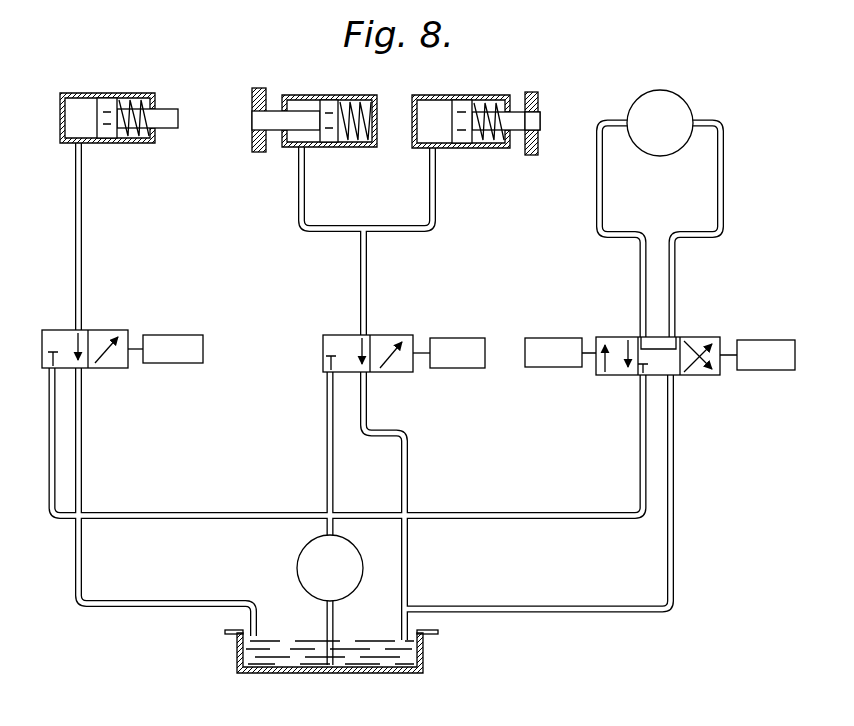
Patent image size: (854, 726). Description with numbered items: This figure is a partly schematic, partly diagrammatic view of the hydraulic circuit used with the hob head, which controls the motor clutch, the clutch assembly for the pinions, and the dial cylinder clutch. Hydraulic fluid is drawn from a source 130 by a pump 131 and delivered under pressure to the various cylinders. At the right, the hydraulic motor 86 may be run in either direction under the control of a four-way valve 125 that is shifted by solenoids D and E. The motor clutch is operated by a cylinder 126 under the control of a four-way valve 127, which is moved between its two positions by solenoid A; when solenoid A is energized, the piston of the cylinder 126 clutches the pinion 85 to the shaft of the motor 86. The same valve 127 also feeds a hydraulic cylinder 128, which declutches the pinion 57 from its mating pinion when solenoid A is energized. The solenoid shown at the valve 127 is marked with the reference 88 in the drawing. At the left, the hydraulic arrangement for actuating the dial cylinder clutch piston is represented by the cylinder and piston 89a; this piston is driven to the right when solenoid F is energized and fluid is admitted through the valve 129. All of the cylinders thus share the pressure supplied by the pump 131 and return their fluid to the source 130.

The cylinder and piston 89a is at (173, 105).
The pinion 57 is at (260, 92).
The hydraulic cylinder 128 is at (336, 97).
The cylinder 126 is at (432, 97).
The pinion 85 is at (536, 97).
The hydraulic motor 86 is at (676, 108).
The valve 129 is at (51, 330).
The four-way valve 127 is at (323, 348).
The solenoid A 88 is at (442, 385).
The four-way valve 125 is at (698, 337).
The pump 131 is at (307, 554).
The source 130 is at (428, 661).